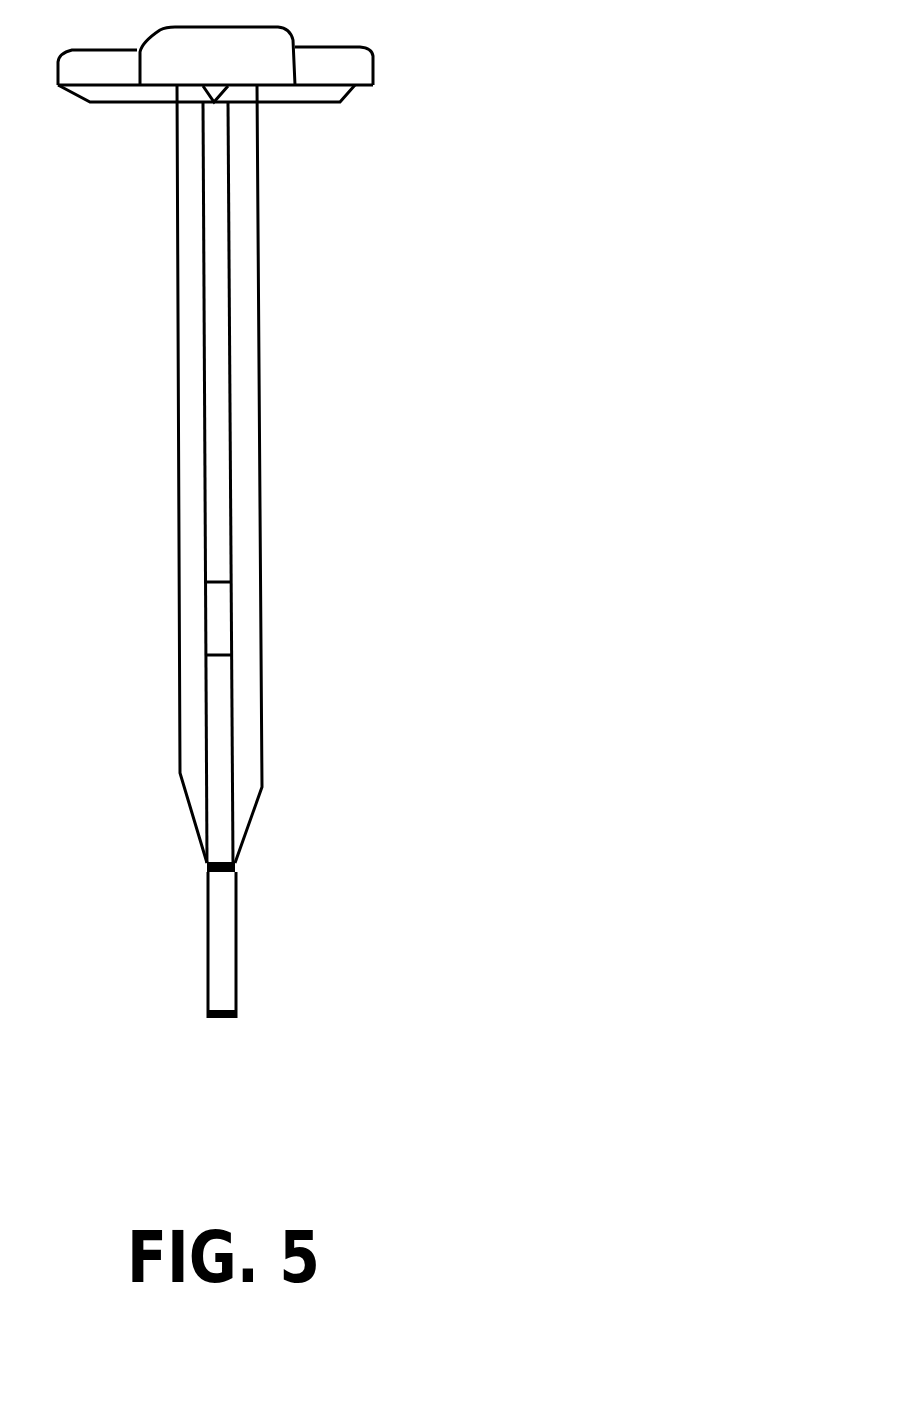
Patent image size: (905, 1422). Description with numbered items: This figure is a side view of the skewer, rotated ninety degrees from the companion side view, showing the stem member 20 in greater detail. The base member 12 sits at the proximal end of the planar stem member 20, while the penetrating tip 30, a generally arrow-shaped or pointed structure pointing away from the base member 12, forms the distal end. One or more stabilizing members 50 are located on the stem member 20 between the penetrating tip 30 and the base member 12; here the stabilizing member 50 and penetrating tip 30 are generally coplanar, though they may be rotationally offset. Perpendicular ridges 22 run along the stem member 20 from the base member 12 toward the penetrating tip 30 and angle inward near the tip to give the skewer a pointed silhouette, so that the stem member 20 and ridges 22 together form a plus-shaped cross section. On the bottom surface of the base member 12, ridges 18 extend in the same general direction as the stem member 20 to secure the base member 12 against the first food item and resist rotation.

The base member 12 is at (378, 67).
The ridges 18 is at (322, 102).
The perpendicular ridges 22 is at (257, 347).
The stem member 20 is at (222, 475).
The stabilizing member 50 is at (222, 623).
The penetrating tip 30 is at (236, 973).